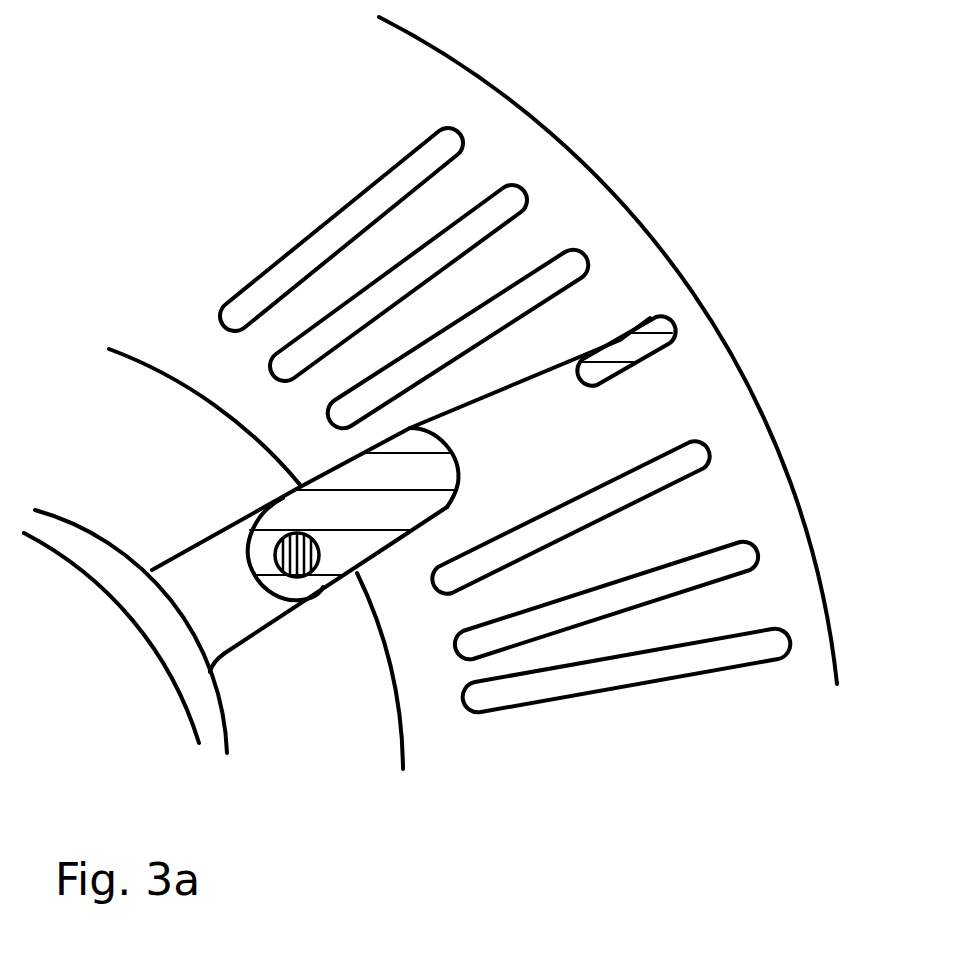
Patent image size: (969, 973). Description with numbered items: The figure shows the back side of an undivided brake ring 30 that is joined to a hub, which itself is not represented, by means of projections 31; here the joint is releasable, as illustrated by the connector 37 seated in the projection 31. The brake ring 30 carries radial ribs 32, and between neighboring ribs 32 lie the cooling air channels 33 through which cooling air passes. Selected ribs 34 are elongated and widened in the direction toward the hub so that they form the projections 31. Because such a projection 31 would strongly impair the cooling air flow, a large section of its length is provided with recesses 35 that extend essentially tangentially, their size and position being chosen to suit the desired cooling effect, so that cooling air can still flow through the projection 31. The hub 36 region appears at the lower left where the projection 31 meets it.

The brake ring 30 is at (572, 218).
The projection 31 is at (325, 503).
The radial rib 32 is at (497, 207).
The cooling air channel 33 is at (363, 438).
The selected rib 34 is at (637, 347).
The recess 35 is at (487, 445).
The hub ring 36 is at (207, 703).
The connector 37 is at (300, 577).